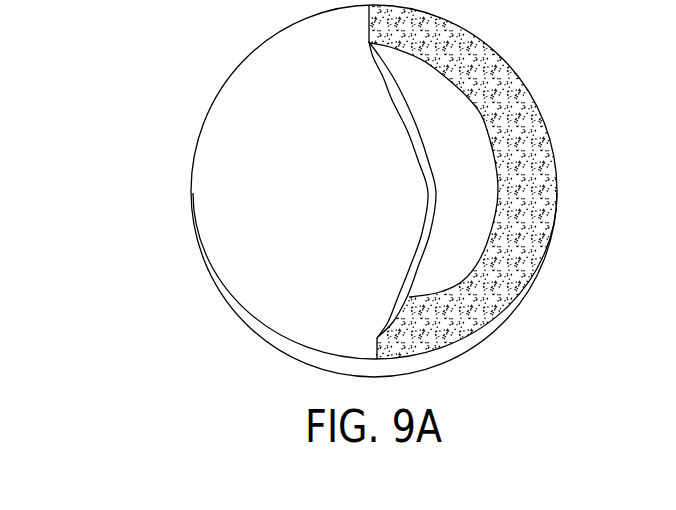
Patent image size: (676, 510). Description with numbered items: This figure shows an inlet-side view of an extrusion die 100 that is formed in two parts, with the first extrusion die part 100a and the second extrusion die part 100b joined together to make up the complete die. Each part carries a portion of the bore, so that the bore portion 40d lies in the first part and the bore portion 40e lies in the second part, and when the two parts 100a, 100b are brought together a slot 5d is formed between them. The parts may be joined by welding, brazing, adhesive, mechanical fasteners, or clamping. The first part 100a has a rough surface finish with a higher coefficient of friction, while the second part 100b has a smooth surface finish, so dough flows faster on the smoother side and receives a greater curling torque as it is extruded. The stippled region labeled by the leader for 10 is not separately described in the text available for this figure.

The extrusion die 100 is at (372, 191).
The first extrusion die part 100a is at (191, 192).
The second extrusion die part 100b is at (557, 178).
The bore portion 40d is at (333, 176).
The bore portion 40e is at (478, 172).
The slot 5d is at (434, 250).
The support body 10 is at (403, 305).